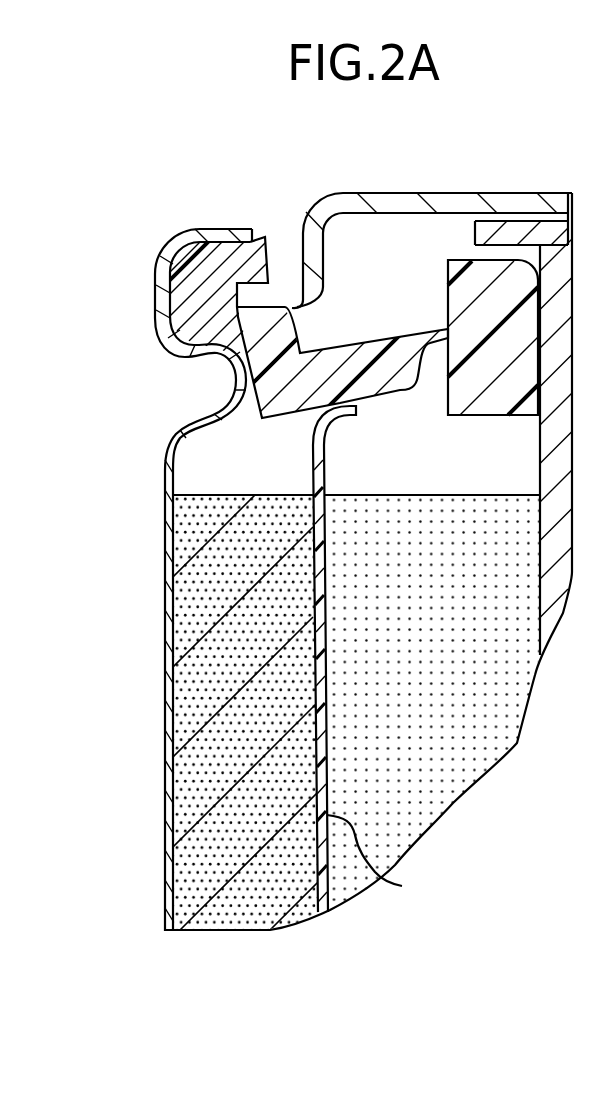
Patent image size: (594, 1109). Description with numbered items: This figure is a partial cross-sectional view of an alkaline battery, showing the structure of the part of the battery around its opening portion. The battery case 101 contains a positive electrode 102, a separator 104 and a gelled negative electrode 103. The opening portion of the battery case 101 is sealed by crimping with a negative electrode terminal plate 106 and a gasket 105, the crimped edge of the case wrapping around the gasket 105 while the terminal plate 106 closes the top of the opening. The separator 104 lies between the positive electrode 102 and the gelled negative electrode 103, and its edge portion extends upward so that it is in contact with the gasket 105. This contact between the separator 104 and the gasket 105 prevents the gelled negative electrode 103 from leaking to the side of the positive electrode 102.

The battery case 101 is at (166, 735).
The positive electrode 102 is at (178, 633).
The gelled negative electrode 103 is at (477, 768).
The separator 104 is at (380, 874).
The gasket 105 is at (185, 288).
The negative electrode terminal plate 106 is at (448, 200).